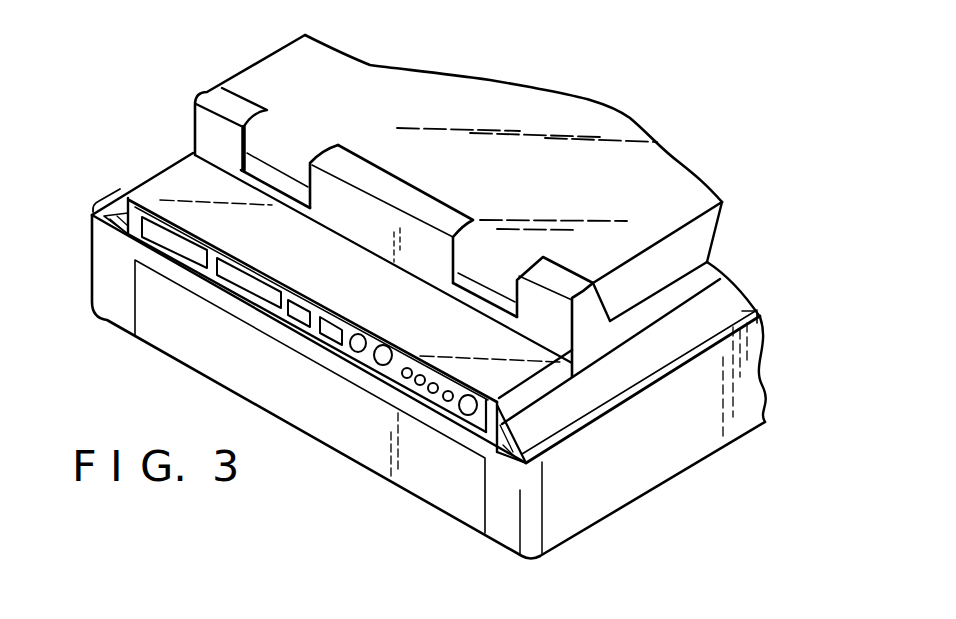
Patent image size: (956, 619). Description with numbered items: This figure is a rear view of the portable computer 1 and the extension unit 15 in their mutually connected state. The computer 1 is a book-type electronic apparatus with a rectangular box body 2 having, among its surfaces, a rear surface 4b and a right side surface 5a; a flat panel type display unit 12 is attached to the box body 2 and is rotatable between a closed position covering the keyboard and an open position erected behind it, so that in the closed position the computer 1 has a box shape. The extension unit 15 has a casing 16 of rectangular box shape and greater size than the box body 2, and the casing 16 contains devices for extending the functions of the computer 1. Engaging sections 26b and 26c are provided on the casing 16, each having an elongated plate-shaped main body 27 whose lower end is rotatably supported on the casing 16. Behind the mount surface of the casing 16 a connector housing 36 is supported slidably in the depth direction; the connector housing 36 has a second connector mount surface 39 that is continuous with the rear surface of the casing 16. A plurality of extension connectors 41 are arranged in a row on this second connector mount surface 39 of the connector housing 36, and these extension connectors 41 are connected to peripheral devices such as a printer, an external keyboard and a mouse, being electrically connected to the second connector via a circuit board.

The portable computer 1 is at (707, 262).
The box body 2 is at (727, 290).
The rear surface 4b is at (418, 260).
The right side surface 5a is at (670, 308).
The display unit 12 is at (543, 119).
The extension unit 15 is at (421, 502).
The casing 16 is at (688, 452).
The engaging section 26b is at (774, 318).
The engaging section 26c is at (98, 206).
The main body 27 is at (623, 383).
The connector housing 36 is at (282, 213).
The second connector mount surface 39 is at (283, 321).
The extension connectors 41 is at (228, 290).